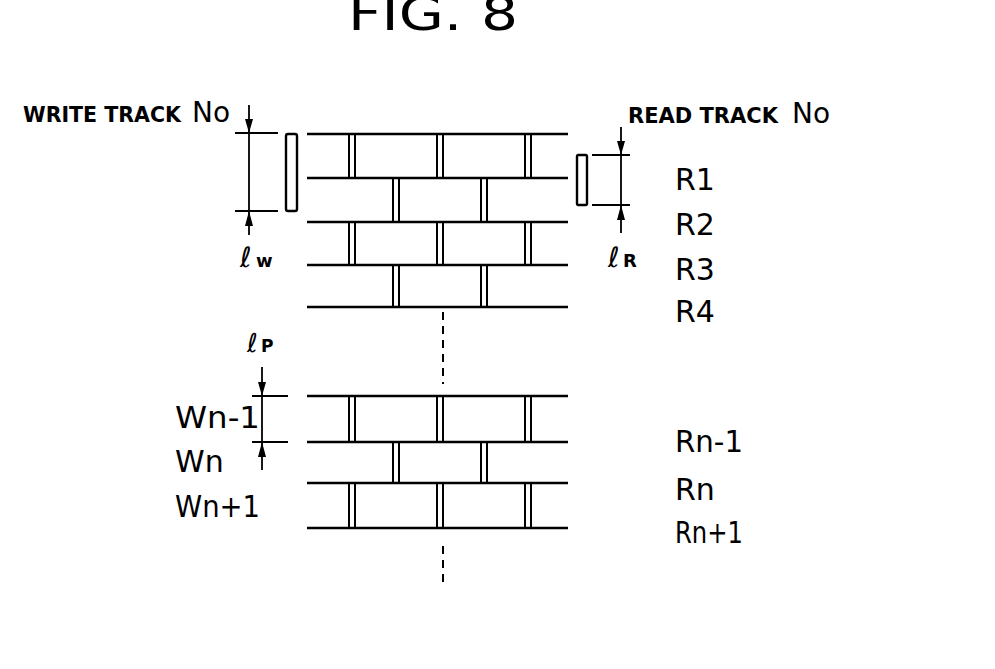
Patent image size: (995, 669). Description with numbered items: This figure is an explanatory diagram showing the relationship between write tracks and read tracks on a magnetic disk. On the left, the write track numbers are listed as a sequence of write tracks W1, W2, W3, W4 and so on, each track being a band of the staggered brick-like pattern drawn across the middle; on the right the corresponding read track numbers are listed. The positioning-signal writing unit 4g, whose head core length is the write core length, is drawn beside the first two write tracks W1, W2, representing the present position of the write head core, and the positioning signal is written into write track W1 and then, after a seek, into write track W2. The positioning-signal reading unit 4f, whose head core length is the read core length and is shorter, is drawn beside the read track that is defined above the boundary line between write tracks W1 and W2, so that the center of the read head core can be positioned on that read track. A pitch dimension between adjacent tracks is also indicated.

The positioning-signal writing unit 4g is at (292, 131).
The positioning-signal reading unit 4f is at (581, 153).
The write track W1 is at (371, 156).
The write track W2 is at (371, 200).
The write track W3 is at (371, 243).
The write track W4 is at (371, 286).